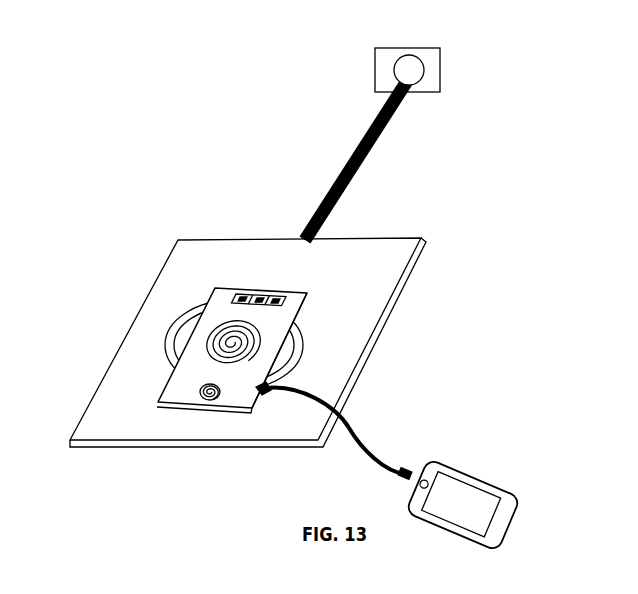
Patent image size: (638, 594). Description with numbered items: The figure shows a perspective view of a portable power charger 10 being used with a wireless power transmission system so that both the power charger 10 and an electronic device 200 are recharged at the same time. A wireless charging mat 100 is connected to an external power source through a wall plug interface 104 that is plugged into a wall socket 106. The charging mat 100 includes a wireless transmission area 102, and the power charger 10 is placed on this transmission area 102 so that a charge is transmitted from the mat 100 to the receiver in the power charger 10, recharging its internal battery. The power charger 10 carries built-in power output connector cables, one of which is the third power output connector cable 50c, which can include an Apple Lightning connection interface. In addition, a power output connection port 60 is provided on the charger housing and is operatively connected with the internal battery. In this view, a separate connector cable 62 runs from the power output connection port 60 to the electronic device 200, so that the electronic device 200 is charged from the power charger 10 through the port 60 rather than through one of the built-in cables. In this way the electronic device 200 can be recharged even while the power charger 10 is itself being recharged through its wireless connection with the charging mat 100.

The portable power charger 10 is at (245, 278).
The wireless charging mat 100 is at (372, 292).
The wireless transmission area 102 is at (155, 343).
The wall plug interface 104 is at (393, 127).
The wall socket 106 is at (428, 58).
The third power output connector cable 50c is at (302, 308).
The power output connection port 60 is at (262, 403).
The connector cable 62 is at (377, 458).
The electronic device 200 is at (508, 502).